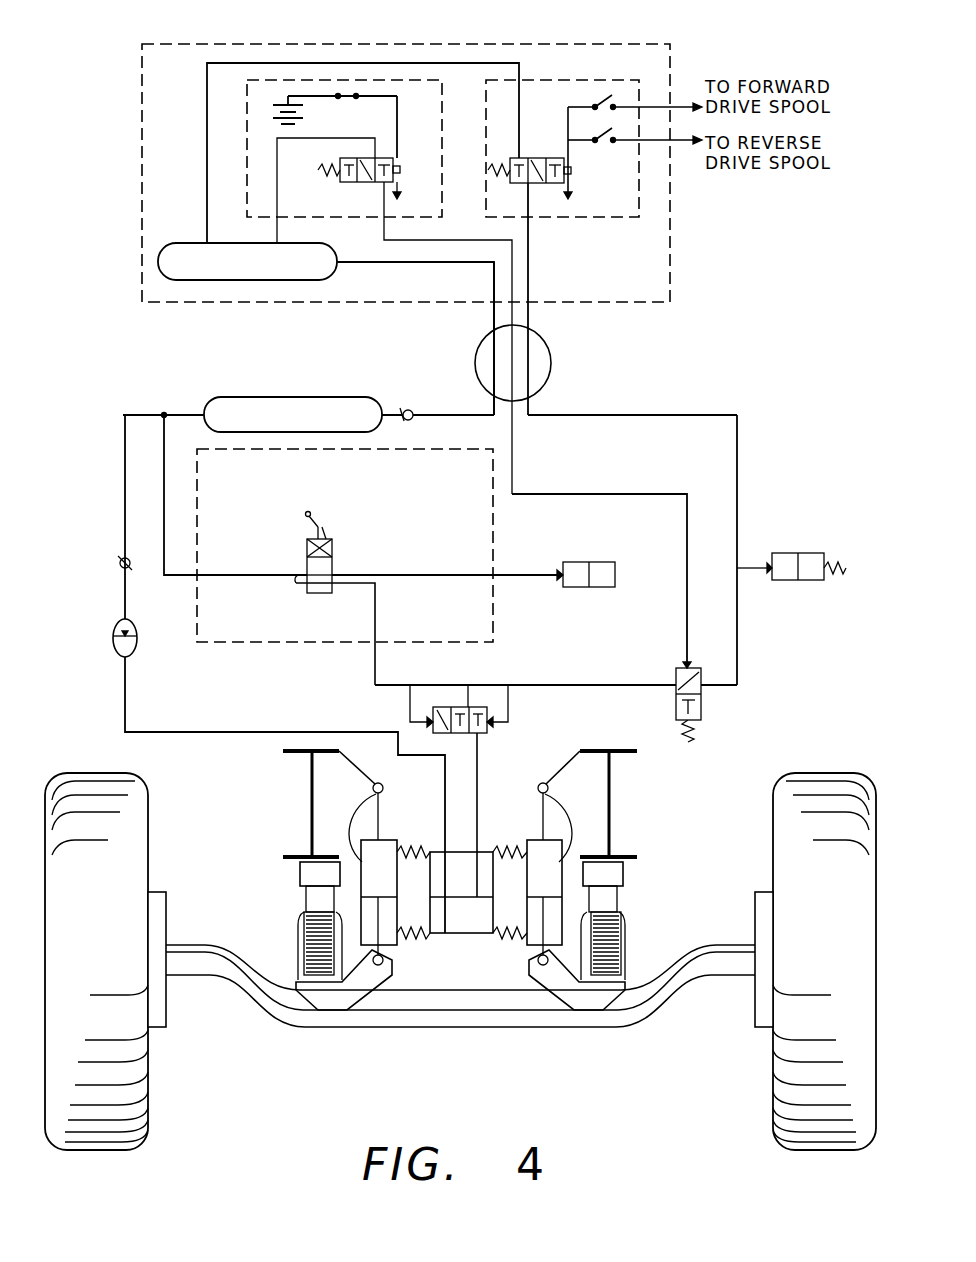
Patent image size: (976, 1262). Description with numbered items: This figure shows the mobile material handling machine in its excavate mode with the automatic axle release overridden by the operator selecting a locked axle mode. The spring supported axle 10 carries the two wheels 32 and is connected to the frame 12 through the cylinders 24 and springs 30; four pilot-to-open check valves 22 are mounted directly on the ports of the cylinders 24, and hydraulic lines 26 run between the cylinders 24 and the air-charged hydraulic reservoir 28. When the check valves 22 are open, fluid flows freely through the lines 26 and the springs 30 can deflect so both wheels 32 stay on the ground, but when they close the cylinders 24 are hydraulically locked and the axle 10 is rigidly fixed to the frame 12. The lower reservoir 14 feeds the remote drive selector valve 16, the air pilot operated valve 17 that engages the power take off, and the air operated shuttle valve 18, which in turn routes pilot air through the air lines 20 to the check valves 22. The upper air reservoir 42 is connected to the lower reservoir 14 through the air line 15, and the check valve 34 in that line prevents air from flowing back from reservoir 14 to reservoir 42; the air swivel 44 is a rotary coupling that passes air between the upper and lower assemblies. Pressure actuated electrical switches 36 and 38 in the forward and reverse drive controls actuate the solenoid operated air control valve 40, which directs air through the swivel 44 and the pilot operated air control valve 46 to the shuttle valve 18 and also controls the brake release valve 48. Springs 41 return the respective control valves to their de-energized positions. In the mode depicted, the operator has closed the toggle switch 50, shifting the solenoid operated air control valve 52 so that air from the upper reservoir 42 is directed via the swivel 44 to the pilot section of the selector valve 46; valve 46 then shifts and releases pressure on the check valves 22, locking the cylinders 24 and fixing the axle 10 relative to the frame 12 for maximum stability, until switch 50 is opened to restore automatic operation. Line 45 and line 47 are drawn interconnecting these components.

The axle 10 is at (450, 1030).
The frame 12 is at (612, 788).
The reservoir 14 is at (282, 410).
The air line 15 is at (492, 314).
The remote drive selector valve 16 is at (332, 540).
The air pilot operated air control valve 17 is at (575, 562).
The air operated shuttle valve 18 is at (483, 735).
The air lines 20 is at (382, 660).
The pilot-to-open check valves 22 is at (414, 850).
The cylinders 24 is at (365, 858).
The hydraulic lines 26 is at (208, 730).
The air-charged hydraulic reservoir 28 is at (115, 642).
The springs 30 is at (308, 958).
The wheels 32 is at (110, 980).
The check valve 34 is at (412, 410).
The pressure actuated electrical switch 36 is at (606, 98).
The pressure actuated electrical switch 38 is at (606, 150).
The electric solenoid operated air control valve 40 is at (545, 158).
The springs 41 is at (318, 176).
The upper air reservoir 42 is at (165, 262).
The air swivel 44 is at (522, 362).
The control line 45 is at (620, 492).
The air pilot operated air control valve 46 is at (676, 672).
The pressure line 47 is at (552, 684).
The brake release valve 48 is at (806, 553).
The toggle switch 50 is at (352, 94).
The electric solenoid operated air control valve 52 is at (365, 158).